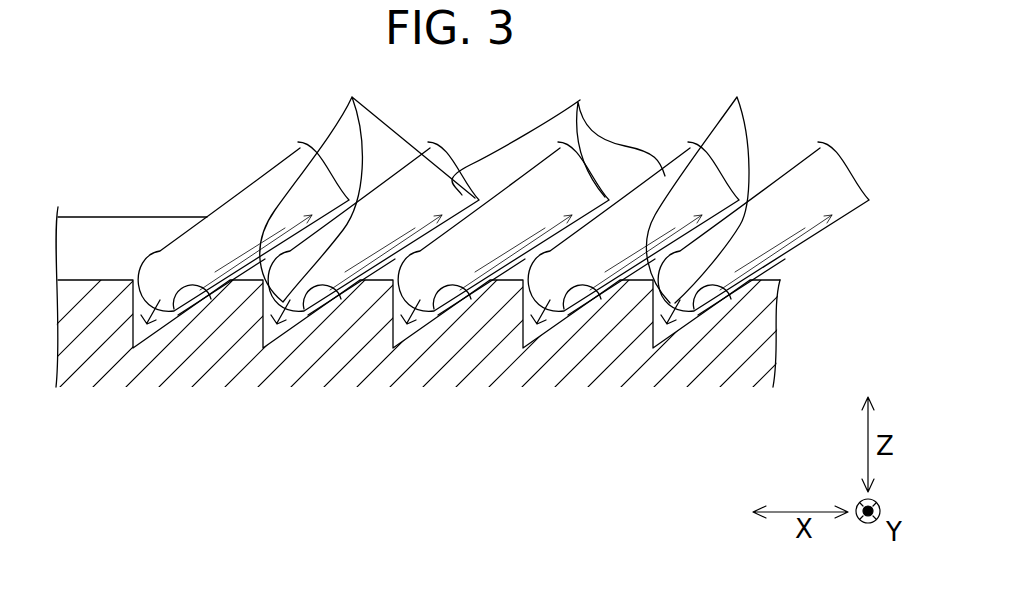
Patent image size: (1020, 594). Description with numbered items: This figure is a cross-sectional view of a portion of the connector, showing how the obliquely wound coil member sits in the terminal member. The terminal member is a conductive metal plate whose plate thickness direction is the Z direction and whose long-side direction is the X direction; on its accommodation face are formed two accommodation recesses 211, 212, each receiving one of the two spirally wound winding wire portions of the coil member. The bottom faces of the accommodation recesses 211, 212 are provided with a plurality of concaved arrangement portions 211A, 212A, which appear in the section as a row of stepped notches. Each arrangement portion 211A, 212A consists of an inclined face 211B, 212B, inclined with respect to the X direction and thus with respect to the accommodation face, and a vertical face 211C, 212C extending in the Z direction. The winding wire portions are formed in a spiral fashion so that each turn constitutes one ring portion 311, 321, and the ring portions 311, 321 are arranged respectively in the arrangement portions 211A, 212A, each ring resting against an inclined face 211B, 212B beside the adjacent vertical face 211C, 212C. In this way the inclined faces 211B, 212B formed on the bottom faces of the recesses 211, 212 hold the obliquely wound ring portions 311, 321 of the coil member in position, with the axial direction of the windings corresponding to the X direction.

The accommodation recess 211 is at (436, 318).
The accommodation recess 212 is at (436, 318).
The arrangement portion 211A is at (556, 185).
The arrangement portion 212A is at (556, 185).
The inclined face 211B is at (426, 416).
The inclined face 212B is at (687, 300).
The vertical face 211C is at (419, 375).
The vertical face 212C is at (647, 327).
The ring portion 311 is at (505, 192).
The ring portion 321 is at (237, 217).